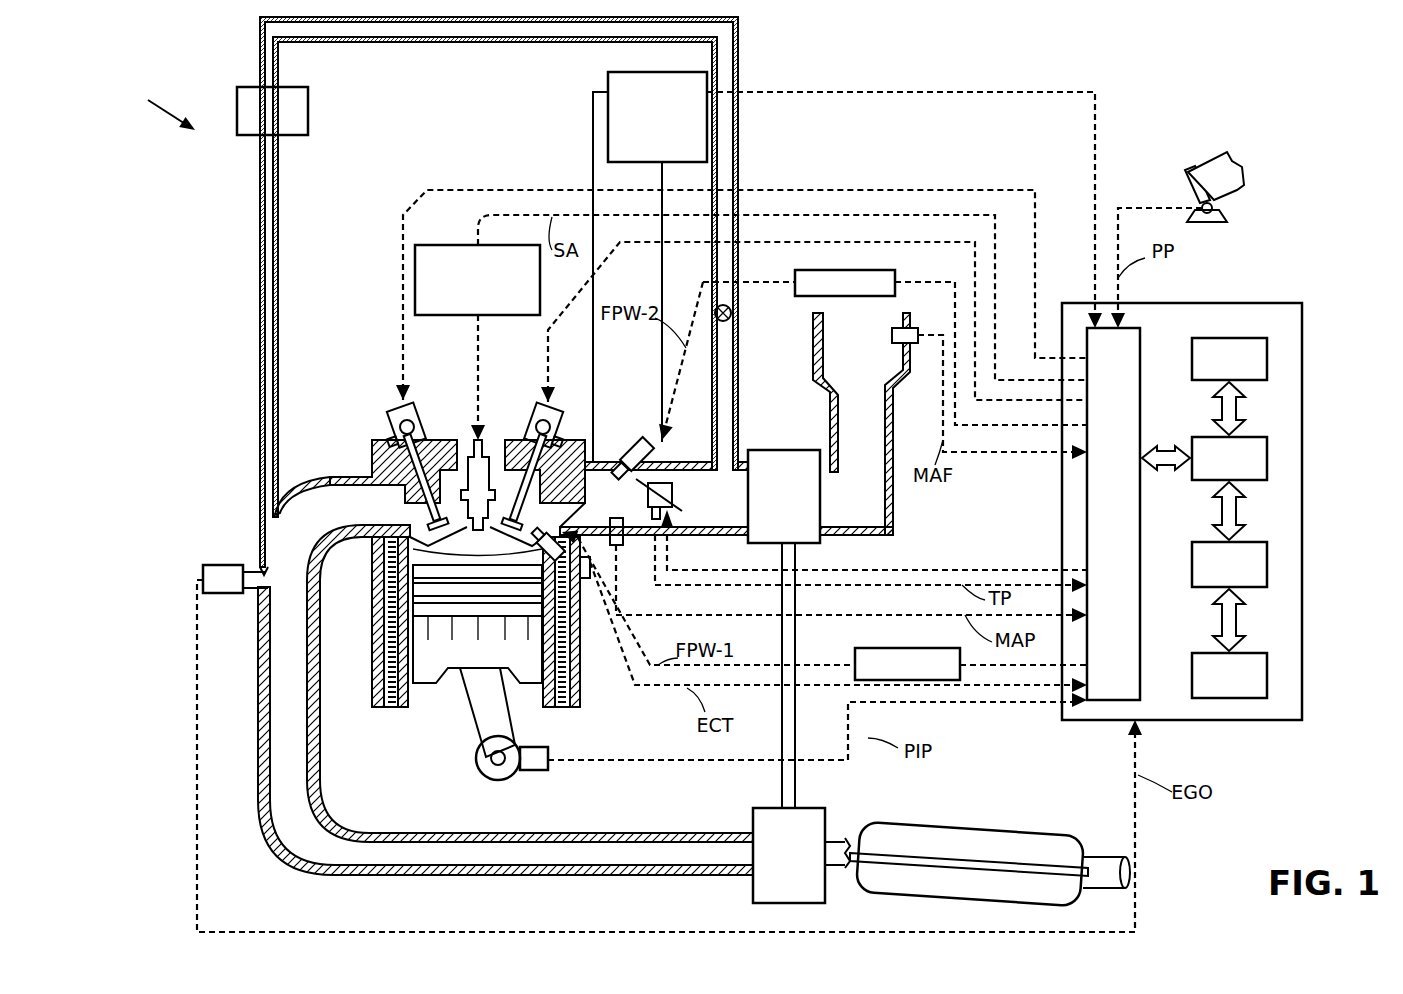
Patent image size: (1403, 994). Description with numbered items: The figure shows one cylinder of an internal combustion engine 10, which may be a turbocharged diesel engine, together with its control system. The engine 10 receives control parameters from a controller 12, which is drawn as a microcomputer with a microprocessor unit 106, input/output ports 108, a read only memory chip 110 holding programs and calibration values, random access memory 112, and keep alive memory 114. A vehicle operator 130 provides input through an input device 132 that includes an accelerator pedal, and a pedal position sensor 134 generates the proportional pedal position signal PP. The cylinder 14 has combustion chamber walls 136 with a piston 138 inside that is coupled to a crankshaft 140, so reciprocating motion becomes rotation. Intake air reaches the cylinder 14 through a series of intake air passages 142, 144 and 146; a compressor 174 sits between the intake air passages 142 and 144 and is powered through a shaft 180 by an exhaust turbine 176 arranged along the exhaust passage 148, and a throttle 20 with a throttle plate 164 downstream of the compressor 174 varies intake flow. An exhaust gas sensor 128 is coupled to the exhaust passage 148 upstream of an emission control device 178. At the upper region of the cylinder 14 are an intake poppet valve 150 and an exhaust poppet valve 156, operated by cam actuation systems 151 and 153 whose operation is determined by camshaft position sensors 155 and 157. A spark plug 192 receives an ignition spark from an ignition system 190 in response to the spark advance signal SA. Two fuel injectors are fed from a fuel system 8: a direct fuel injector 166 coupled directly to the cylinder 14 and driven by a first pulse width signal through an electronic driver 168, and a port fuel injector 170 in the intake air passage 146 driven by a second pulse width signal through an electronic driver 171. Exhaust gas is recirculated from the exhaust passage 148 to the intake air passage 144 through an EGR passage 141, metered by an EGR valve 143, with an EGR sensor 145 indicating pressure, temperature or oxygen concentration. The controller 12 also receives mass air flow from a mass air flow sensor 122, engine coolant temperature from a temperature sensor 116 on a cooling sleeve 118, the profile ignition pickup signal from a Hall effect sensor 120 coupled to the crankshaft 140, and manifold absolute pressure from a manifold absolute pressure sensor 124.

The internal combustion engine 10 is at (154, 105).
The fuel system 8 is at (847, 267).
The controller 12 is at (1290, 303).
The cylinder 14 is at (377, 573).
The throttle 20 is at (668, 485).
The microprocessor unit 106 is at (1270, 452).
The input/output ports 108 is at (1143, 335).
The read only memory chip 110 is at (1270, 355).
The random access memory 112 is at (1270, 563).
The keep alive memory 114 is at (1270, 673).
The temperature sensor 116 is at (590, 582).
The cooling sleeve 118 is at (580, 600).
The Hall effect sensor 120 is at (533, 773).
The mass air flow sensor 122 is at (905, 328).
The manifold absolute pressure sensor 124 is at (619, 548).
The exhaust gas sensor 128 is at (203, 568).
The vehicle operator 130 is at (1244, 171).
The input device 132 is at (1187, 182).
The pedal position sensor 134 is at (1225, 207).
The combustion chamber walls 136 is at (418, 688).
The piston 138 is at (458, 652).
The crankshaft 140 is at (488, 783).
The EGR passage 141 is at (738, 158).
The intake air passage 142 is at (861, 424).
The EGR valve 143 is at (731, 320).
The intake air passage 144 is at (726, 498).
The EGR sensor 145 is at (308, 112).
The intake air passage 146 is at (595, 505).
The exhaust passage 148 is at (505, 676).
The intake poppet valve 150 is at (512, 503).
The cam actuation system 151 is at (555, 410).
The cam actuation system 153 is at (417, 408).
The camshaft position sensor 155 is at (560, 430).
The exhaust poppet valve 156 is at (415, 497).
The camshaft position sensor 157 is at (392, 430).
The throttle plate 164 is at (630, 478).
The fuel injector 166 is at (692, 585).
The electronic driver 168 is at (858, 650).
The fuel injector 170 is at (645, 443).
The electronic driver 171 is at (785, 282).
The compressor 174 is at (768, 450).
The exhaust turbine 176 is at (752, 892).
The emission control device 178 is at (1043, 828).
The shaft 180 is at (797, 768).
The ignition system 190 is at (440, 245).
The spark plug 192 is at (470, 478).